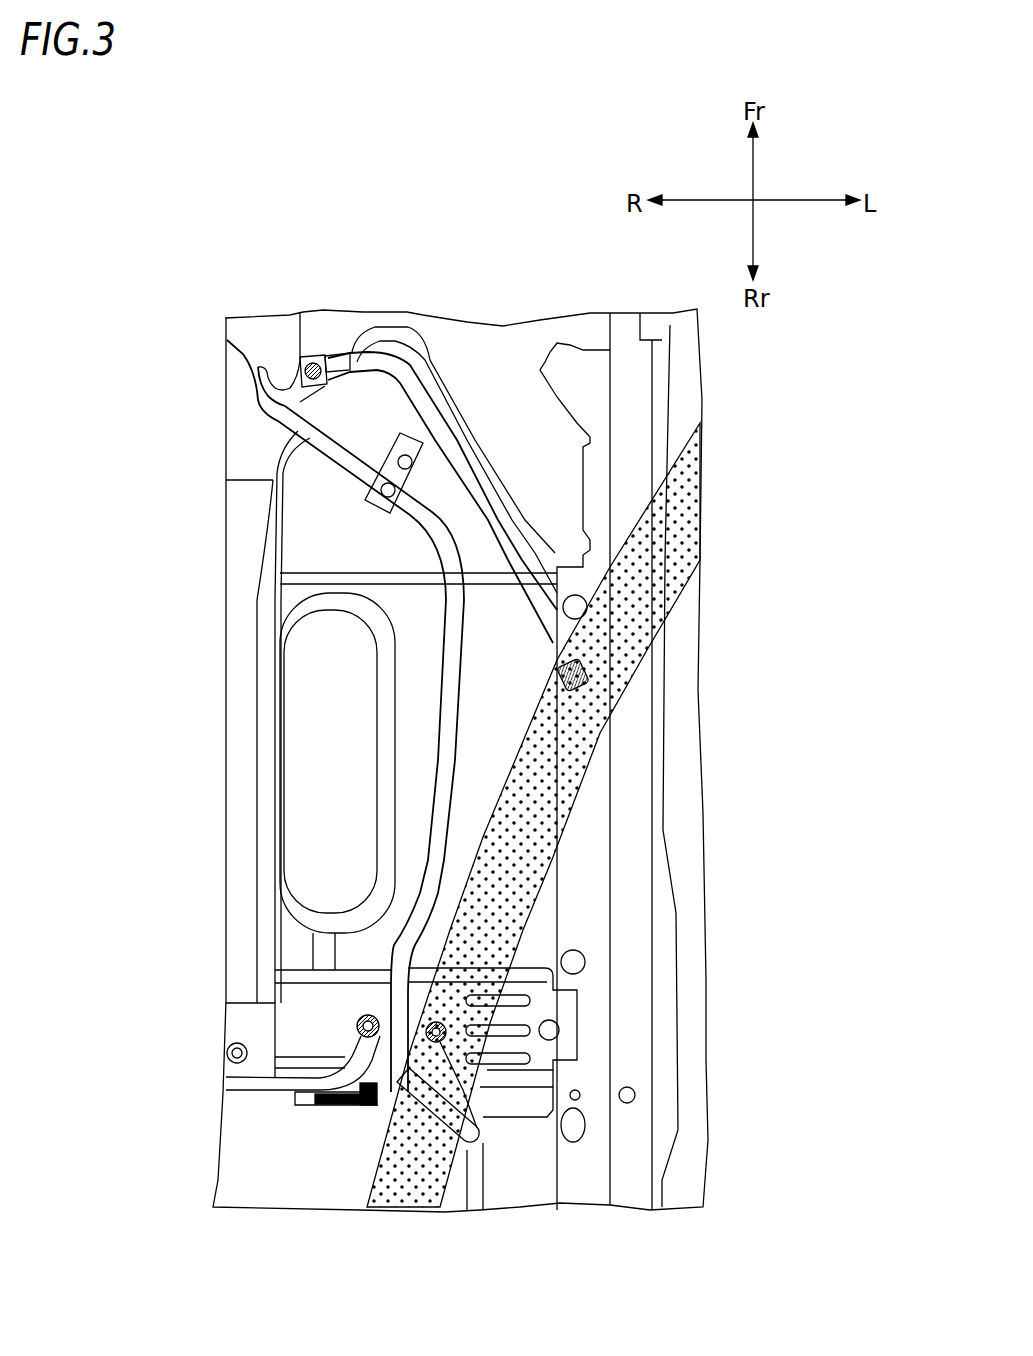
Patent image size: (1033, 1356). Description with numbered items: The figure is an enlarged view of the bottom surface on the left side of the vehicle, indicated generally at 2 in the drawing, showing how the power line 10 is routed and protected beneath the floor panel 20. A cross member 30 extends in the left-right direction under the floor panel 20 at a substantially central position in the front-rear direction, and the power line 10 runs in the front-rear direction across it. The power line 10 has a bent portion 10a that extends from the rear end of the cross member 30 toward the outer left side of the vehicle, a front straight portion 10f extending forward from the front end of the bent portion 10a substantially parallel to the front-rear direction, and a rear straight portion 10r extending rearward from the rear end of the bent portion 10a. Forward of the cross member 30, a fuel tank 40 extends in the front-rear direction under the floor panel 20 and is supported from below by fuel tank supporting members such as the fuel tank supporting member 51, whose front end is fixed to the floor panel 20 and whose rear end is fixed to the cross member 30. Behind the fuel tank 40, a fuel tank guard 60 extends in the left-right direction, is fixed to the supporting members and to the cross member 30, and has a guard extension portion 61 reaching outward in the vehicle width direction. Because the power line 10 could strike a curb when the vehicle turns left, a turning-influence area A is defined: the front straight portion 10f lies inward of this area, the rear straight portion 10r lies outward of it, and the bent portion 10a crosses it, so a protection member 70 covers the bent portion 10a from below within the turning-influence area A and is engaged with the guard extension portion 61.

The vehicle body 2 is at (320, 302).
The power line 10 is at (460, 596).
The front straight portion 10f is at (423, 960).
The bent portion 10a is at (380, 1150).
The rear straight portion 10r is at (490, 1197).
The floor panel 20 is at (497, 742).
The cross member 30 is at (553, 993).
The fuel tank 40 is at (320, 800).
The fuel tank supporting member 51 is at (243, 970).
The fuel tank guard 60 is at (243, 1098).
The guard extension portion 61 is at (347, 1113).
The protection member 70 is at (557, 1095).
The turning-influence area A is at (640, 558).